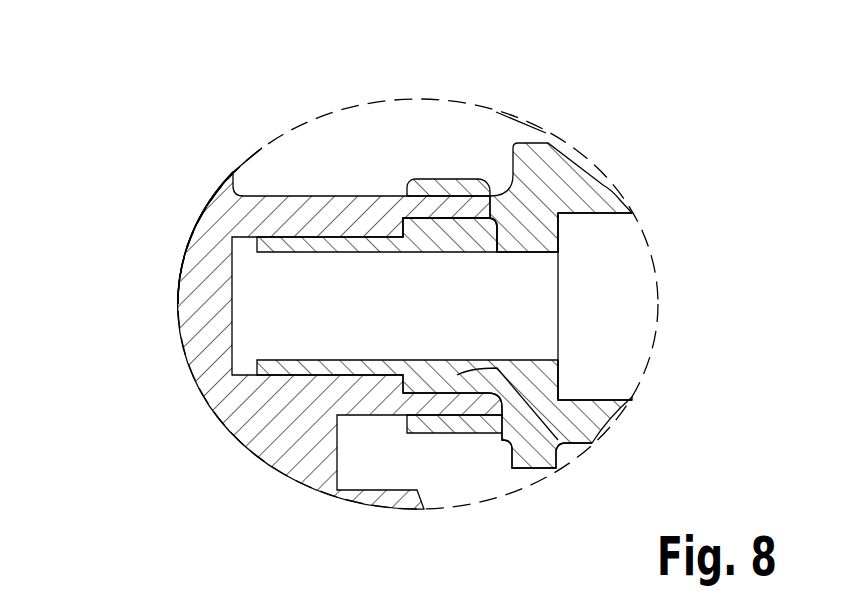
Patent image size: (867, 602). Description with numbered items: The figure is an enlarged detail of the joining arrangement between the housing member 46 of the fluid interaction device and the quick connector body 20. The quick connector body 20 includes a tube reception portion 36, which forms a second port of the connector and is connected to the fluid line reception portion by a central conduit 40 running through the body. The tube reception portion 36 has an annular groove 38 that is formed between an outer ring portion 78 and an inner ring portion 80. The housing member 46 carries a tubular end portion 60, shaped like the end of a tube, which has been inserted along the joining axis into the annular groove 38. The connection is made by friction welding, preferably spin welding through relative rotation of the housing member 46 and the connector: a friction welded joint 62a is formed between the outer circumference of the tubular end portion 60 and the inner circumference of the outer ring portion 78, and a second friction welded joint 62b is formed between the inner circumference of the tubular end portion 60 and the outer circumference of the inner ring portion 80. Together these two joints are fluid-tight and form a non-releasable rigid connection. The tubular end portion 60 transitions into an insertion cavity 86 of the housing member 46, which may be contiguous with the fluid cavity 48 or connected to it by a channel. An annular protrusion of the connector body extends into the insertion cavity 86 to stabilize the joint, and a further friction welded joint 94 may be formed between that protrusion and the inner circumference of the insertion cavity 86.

The quick connector body 20 is at (612, 188).
The tube reception portion 36 is at (470, 148).
The annular groove 38 is at (500, 437).
The central conduit 40 is at (627, 307).
The housing member 46 is at (200, 300).
The fluid cavity 48 is at (205, 238).
The insertion cavity 86 is at (205, 238).
The tubular end portion 60 is at (437, 208).
The friction welded joint 62a is at (562, 233).
The second friction welded joint 62b is at (483, 219).
The outer ring portion 78 is at (437, 433).
The inner ring portion 80 is at (558, 389).
The friction welded joint 94 is at (296, 236).